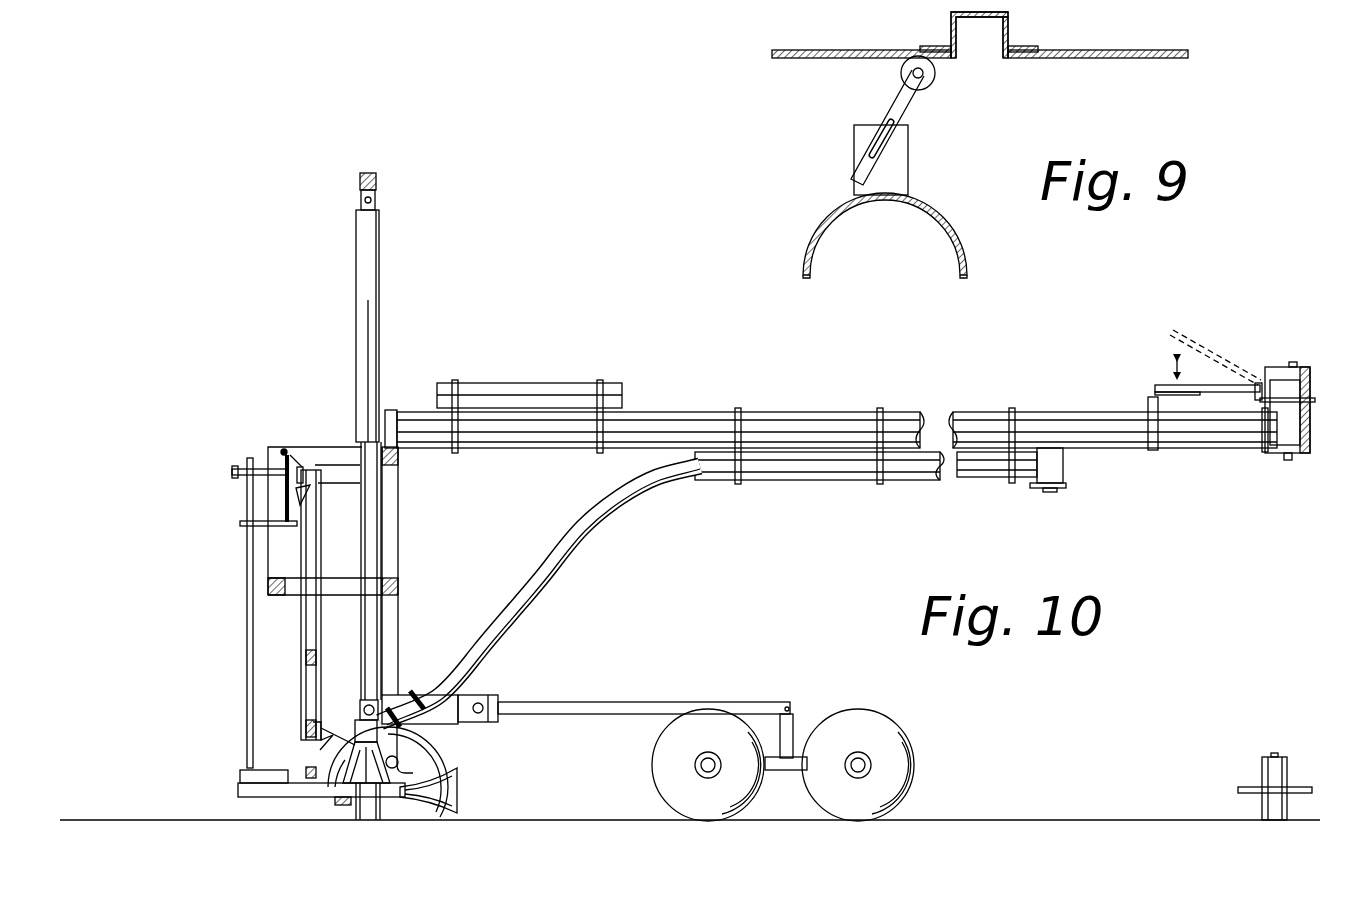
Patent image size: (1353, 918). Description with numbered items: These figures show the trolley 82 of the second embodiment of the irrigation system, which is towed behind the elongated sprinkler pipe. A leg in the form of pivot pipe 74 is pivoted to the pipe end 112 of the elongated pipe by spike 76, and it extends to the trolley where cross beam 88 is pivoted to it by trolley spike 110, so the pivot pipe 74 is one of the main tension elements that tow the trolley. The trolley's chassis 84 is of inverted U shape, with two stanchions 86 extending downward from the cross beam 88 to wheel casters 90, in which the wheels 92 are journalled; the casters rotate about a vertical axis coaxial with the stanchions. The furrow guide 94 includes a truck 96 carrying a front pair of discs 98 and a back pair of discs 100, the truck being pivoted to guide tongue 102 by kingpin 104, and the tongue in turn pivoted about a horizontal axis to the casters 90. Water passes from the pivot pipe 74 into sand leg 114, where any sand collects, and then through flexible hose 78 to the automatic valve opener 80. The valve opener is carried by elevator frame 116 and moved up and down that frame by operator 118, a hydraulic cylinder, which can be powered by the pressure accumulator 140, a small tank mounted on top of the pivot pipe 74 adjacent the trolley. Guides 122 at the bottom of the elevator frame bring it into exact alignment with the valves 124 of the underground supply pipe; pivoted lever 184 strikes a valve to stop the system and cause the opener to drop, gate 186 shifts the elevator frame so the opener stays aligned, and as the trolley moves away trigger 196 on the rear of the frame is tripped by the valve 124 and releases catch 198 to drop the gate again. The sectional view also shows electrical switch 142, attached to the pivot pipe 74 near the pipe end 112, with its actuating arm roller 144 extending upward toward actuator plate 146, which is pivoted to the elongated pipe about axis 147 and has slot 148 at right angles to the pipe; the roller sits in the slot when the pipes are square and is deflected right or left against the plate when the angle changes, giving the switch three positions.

In FIG. 9, the pivot pipe 74 is at (964, 247).
In FIG. 10, the pivot pipe 74 is at (1196, 448).
In FIG. 10, the spike 76 is at (1288, 460).
In FIG. 10, the flexible hose 78 is at (572, 555).
In FIG. 10, the automatic valve opener 80 is at (374, 815).
In FIG. 10, the trolley 82 is at (307, 422).
In FIG. 10, the chassis 84 is at (398, 582).
In FIG. 10, the stanchions 86 is at (398, 524).
In FIG. 10, the cross beam 88 is at (398, 462).
In FIG. 10, the wheel casters 90 is at (404, 695).
In FIG. 10, the wheels 92 is at (449, 742).
In FIG. 10, the furrow guide 94 is at (857, 696).
In FIG. 10, the truck 96 is at (785, 769).
In FIG. 10, the front pair of discs 98 is at (911, 746).
In FIG. 10, the back pair of discs 100 is at (656, 759).
In FIG. 10, the guide tongue 102 is at (566, 700).
In FIG. 10, the kingpin 104 is at (793, 715).
In FIG. 10, the trolley spike 110 is at (398, 487).
In FIG. 10, the pipe end 112 is at (1312, 383).
In FIG. 10, the sand leg 114 is at (826, 480).
In FIG. 10, the elevator frame 116 is at (382, 183).
In FIG. 10, the operator 118 is at (355, 297).
In FIG. 10, the guides 122 is at (459, 790).
In FIG. 10, the valves 124 is at (1261, 774).
In FIG. 10, the pressure accumulator 140 is at (534, 383).
In FIG. 9, the electrical switch 142 is at (907, 160).
In FIG. 10, the electrical switch 142 is at (1147, 408).
In FIG. 9, the actuating arm roller 144 is at (930, 86).
In FIG. 9, the actuator plate 146 is at (1089, 58).
In FIG. 10, the actuator plate 146 is at (1172, 378).
In FIG. 10, the axis 147 is at (1257, 387).
In FIG. 9, the slot 148 is at (982, 34).
In FIG. 10, the pivoted lever 184 is at (339, 807).
In FIG. 10, the gate 186 is at (306, 731).
In FIG. 10, the trigger 196 is at (249, 770).
In FIG. 10, the catch 198 is at (309, 496).